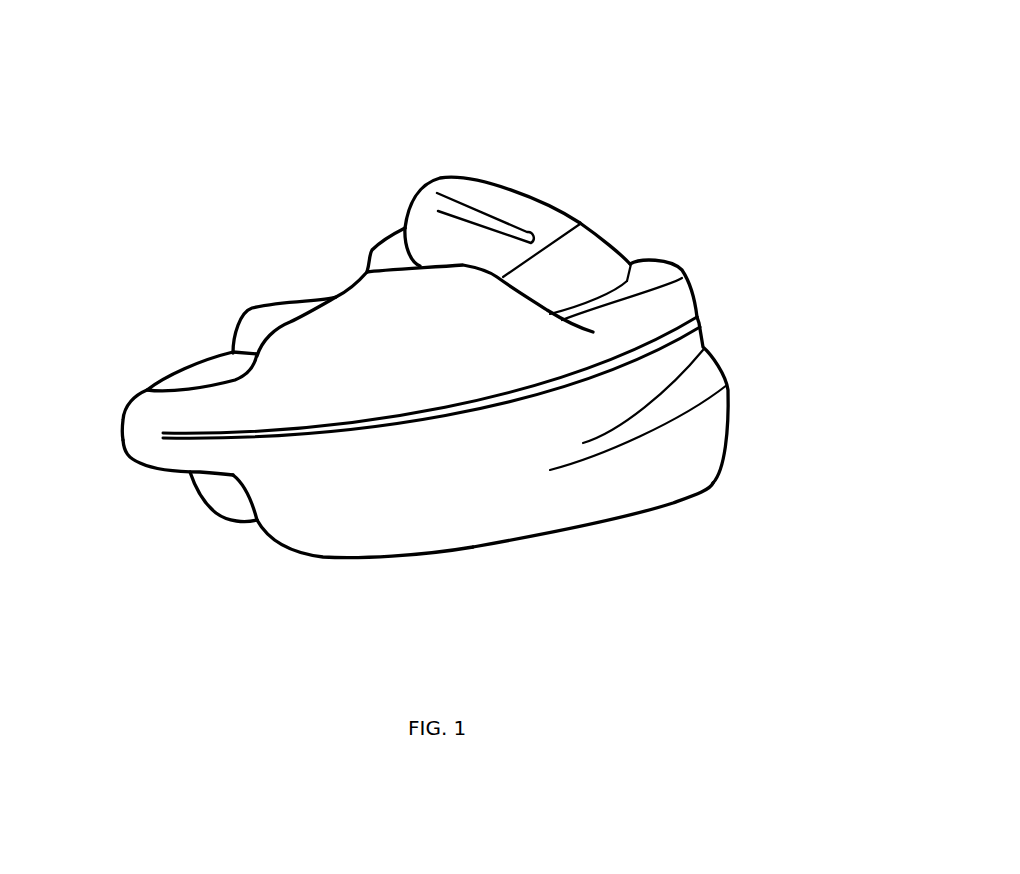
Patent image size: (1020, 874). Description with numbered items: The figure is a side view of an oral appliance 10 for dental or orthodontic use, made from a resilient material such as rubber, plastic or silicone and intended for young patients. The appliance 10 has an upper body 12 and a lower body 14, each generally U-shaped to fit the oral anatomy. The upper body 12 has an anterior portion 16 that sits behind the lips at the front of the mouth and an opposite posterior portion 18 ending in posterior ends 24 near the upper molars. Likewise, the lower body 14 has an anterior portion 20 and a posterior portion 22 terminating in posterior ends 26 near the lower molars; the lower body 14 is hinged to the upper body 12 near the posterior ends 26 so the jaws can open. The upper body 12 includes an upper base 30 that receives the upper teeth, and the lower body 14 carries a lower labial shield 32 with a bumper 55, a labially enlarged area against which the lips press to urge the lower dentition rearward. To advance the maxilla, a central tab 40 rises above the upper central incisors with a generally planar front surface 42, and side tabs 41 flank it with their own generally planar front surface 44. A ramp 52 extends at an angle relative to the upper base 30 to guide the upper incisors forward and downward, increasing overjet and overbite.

The appliance 10 is at (690, 100).
The upper body 12 is at (698, 315).
The lower body 14 is at (380, 523).
The anterior portion 16 is at (687, 273).
The posterior portion 18 is at (197, 400).
The anterior portion 20 is at (703, 340).
The posterior portion 22 is at (167, 447).
The posterior ends 24 is at (138, 393).
The posterior ends 26 is at (122, 452).
The upper base 30 is at (220, 370).
The lower labial shield 32 is at (583, 527).
The central tab 40 is at (447, 183).
The side tabs 41 is at (410, 215).
The front surface 42 is at (473, 193).
The front surface 44 is at (428, 230).
The ramp 52 is at (607, 247).
The bumper 55 is at (728, 438).